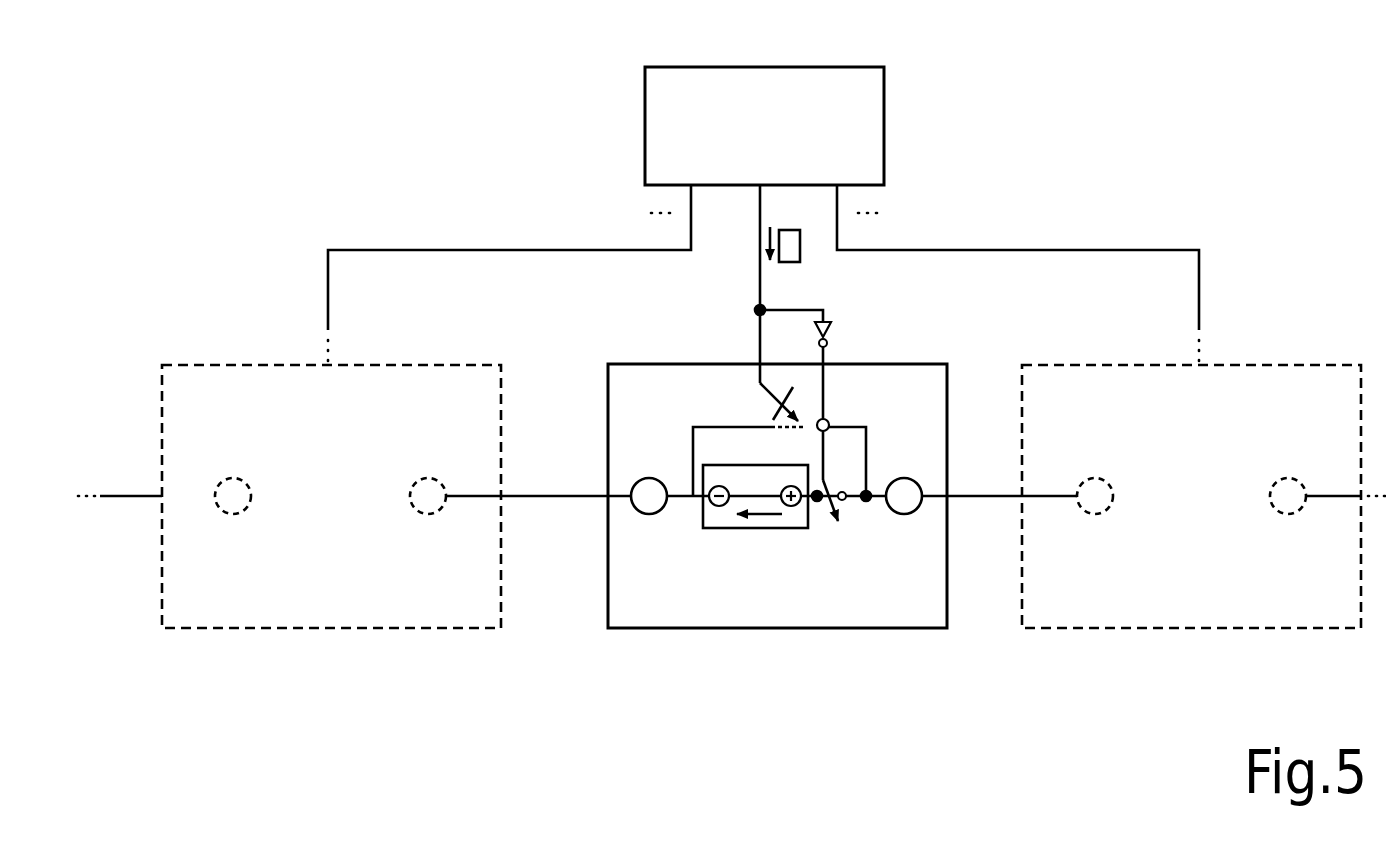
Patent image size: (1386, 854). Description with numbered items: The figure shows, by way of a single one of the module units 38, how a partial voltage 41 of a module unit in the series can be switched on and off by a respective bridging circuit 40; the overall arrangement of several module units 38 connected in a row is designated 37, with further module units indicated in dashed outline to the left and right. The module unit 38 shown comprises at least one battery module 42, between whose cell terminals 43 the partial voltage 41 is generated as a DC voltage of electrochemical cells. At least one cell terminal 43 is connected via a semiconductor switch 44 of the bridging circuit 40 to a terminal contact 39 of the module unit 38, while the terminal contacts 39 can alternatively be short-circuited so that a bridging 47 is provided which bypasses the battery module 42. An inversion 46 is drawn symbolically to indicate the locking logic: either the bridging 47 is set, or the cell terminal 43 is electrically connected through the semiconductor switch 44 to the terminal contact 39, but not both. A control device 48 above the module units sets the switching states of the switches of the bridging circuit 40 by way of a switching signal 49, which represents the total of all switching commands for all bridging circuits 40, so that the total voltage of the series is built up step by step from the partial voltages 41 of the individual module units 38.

The battery system 37 is at (262, 340).
The module unit 38 is at (761, 523).
The terminal contact 39 is at (428, 478).
The bridging circuit 40 is at (726, 350).
The partial voltage 41 is at (767, 515).
The battery module 42 is at (757, 515).
The cell terminal 43 is at (719, 486).
The semiconductor switch 44 is at (856, 516).
The inversion 46 is at (835, 327).
The bridging 47 is at (829, 420).
The control device 48 is at (884, 122).
The switching signal 49 is at (800, 247).